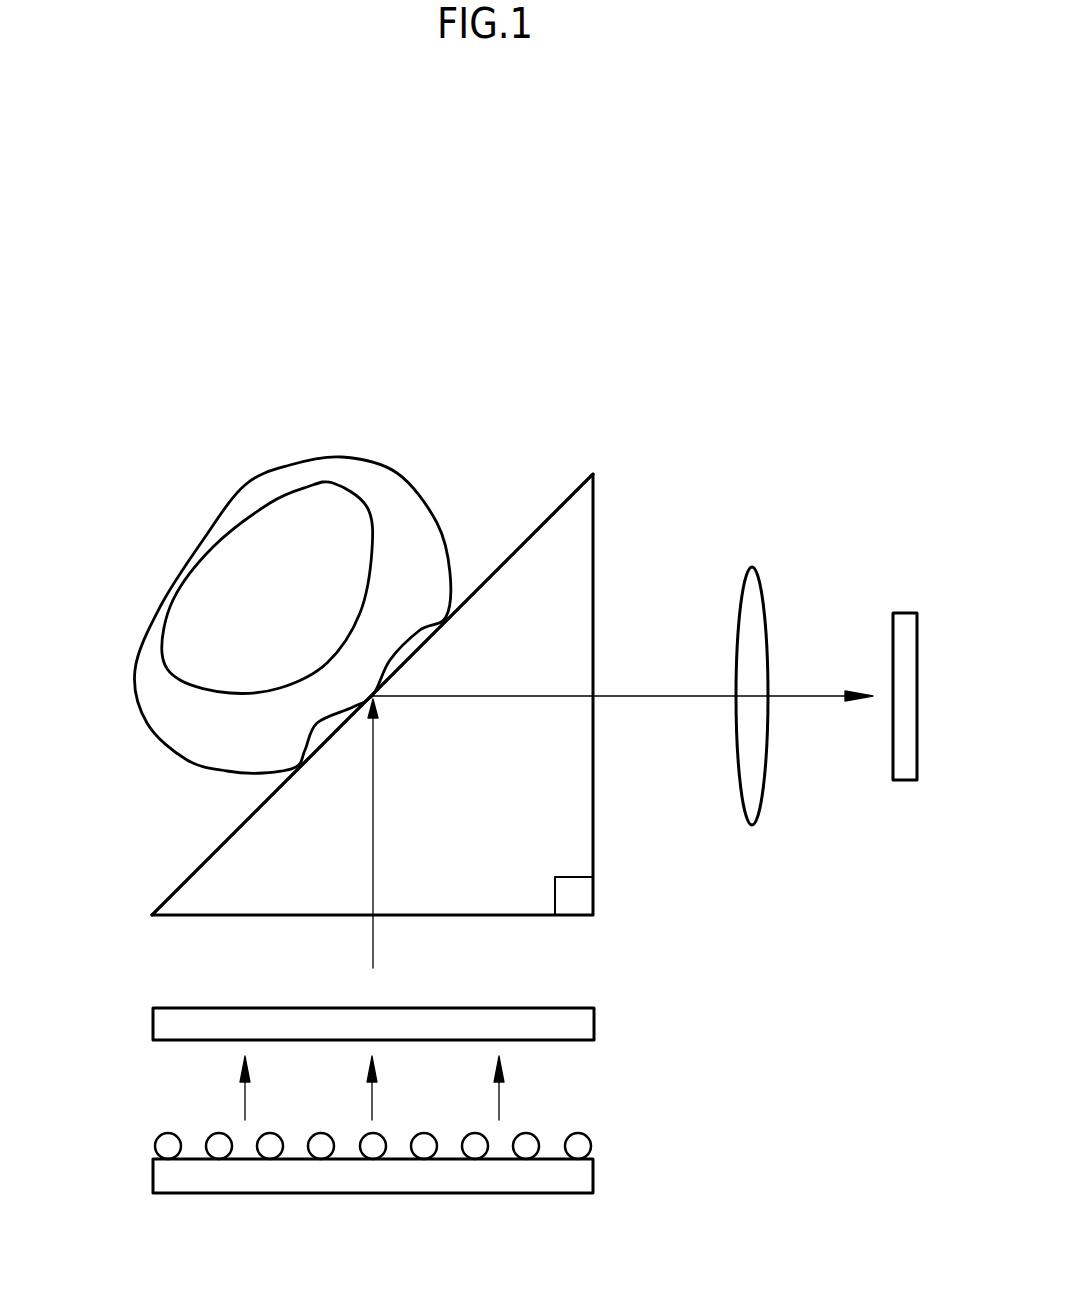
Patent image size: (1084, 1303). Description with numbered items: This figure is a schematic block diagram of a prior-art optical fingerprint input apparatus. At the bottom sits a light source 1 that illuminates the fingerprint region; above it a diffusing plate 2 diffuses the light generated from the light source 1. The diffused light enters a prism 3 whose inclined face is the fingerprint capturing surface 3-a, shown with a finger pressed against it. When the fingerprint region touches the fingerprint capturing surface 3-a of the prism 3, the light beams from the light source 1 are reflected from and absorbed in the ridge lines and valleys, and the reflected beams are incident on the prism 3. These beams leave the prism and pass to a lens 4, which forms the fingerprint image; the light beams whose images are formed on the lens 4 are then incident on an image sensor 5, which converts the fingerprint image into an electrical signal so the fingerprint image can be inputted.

The light source 1 is at (589, 1136).
The diffusing plate 2 is at (153, 1023).
The prism 3 is at (372, 694).
The fingerprint capturing surface 3-a is at (183, 883).
The lens 4 is at (760, 813).
The image sensor 5 is at (917, 760).